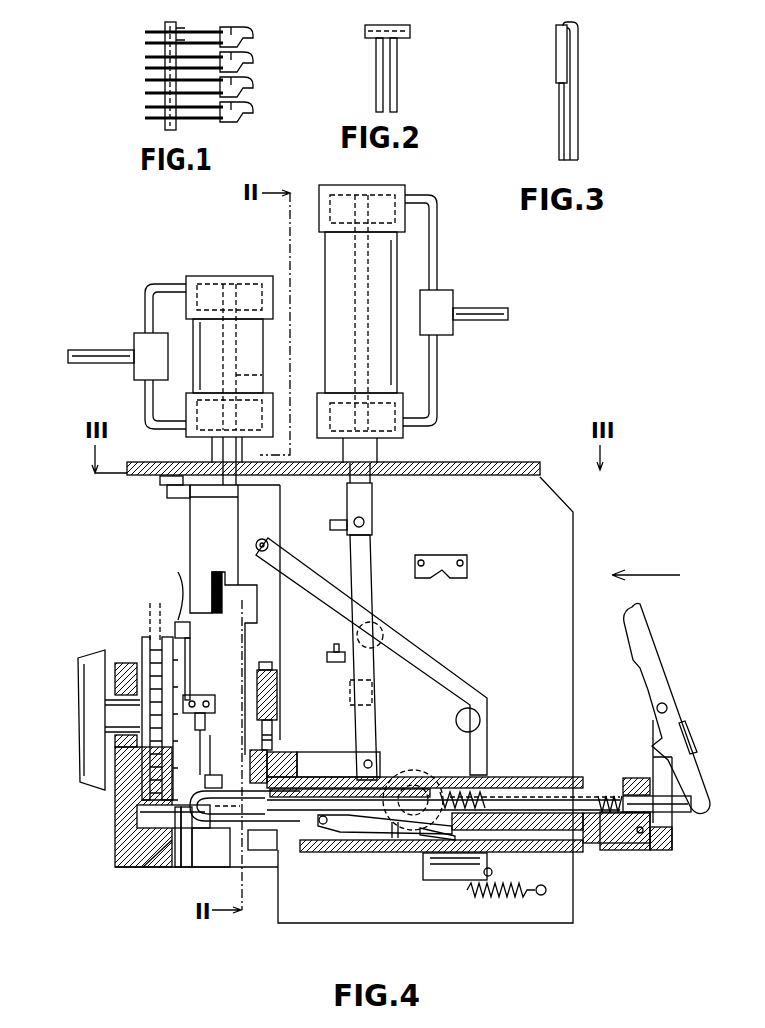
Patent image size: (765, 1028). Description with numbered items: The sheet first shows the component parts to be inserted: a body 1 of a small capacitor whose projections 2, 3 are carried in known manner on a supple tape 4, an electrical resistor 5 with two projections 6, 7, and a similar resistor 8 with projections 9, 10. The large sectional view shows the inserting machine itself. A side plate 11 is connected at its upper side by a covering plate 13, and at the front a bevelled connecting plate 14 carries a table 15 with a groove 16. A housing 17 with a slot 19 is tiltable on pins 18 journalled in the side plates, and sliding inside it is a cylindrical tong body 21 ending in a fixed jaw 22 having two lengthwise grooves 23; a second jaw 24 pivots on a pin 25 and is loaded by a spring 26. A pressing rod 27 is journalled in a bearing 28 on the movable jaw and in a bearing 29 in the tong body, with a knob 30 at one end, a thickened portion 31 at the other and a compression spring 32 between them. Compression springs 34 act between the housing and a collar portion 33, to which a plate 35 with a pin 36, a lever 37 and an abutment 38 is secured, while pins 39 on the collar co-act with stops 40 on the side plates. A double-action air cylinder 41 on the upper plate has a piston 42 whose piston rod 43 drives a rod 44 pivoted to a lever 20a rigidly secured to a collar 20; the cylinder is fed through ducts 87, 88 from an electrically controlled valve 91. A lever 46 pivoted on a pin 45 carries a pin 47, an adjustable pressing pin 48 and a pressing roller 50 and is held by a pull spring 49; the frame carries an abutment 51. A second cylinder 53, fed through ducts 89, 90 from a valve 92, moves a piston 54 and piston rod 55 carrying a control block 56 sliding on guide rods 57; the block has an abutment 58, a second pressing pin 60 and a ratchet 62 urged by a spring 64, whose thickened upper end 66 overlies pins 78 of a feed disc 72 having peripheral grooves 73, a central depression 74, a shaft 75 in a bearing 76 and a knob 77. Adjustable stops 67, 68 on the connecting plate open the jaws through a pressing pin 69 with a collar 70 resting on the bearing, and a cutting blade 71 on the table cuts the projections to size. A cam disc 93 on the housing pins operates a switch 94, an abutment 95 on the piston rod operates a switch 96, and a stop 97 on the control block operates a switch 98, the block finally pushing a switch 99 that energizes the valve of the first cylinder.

In FIG. 1, the body 1 is at (245, 27).
In FIG. 1, the projection 2 is at (165, 30).
In FIG. 1, the projection 3 is at (150, 42).
In FIG. 1, the supple tape 4 is at (176, 30).
In FIG. 2, the electrical resistor 5 is at (390, 26).
In FIG. 2, the projection 6 is at (376, 96).
In FIG. 2, the projection 7 is at (397, 96).
In FIG. 3, the resistor 8 is at (556, 45).
In FIG. 3, the projection 9 is at (579, 125).
In FIG. 3, the projection 10 is at (559, 125).
In FIG. 4, the side plate 11 is at (555, 530).
In FIG. 4, the covering plate 13 is at (497, 462).
In FIG. 4, the bevelled connecting plate 14 is at (268, 673).
In FIG. 4, the table 15 is at (115, 845).
In FIG. 4, the groove 16 is at (222, 850).
In FIG. 4, the housing 17 is at (583, 852).
In FIG. 4, the pin 18 is at (393, 838).
In FIG. 4, the slot 19 is at (355, 834).
In FIG. 4, the collar 20 is at (298, 760).
In FIG. 4, the lever 20a is at (312, 760).
In FIG. 4, the tong body 21 is at (600, 843).
In FIG. 4, the fixed jaw 22 is at (195, 765).
In FIG. 4, the groove 23 is at (182, 835).
In FIG. 4, the second jaw 24 is at (190, 850).
In FIG. 4, the pin 25 is at (325, 828).
In FIG. 4, the spring 26 is at (432, 840).
In FIG. 4, the pressing rod 27 is at (548, 778).
In FIG. 4, the bearing 28 is at (278, 850).
In FIG. 4, the bearing 29 is at (670, 840).
In FIG. 4, the knob 30 is at (262, 822).
In FIG. 4, the thickened portion 31 is at (680, 812).
In FIG. 4, the compression spring 32 is at (606, 778).
In FIG. 4, the collar portion 33 is at (635, 850).
In FIG. 4, the compression spring 34 is at (374, 495).
In FIG. 4, the plate 35 is at (662, 850).
In FIG. 4, the pin 36 is at (668, 708).
In FIG. 4, the lever 37 is at (650, 660).
In FIG. 4, the abutment 38 is at (697, 745).
In FIG. 4, the pin 39 is at (658, 850).
In FIG. 4, the stop 40 is at (443, 558).
In FIG. 4, the double-action air cylinder 41 is at (337, 258).
In FIG. 4, the piston 42 is at (370, 190).
In FIG. 4, the piston rod 43 is at (355, 347).
In FIG. 4, the rod 44 is at (372, 565).
In FIG. 4, the pin 45 is at (480, 720).
In FIG. 4, the lever 46 is at (455, 700).
In FIG. 4, the pin 47 is at (270, 542).
In FIG. 4, the adjustable pressing pin 48 is at (445, 880).
In FIG. 4, the pull spring 49 is at (490, 893).
In FIG. 4, the pressing roller 50 is at (385, 633).
In FIG. 4, the abutment 51 is at (374, 700).
In FIG. 4, the second double-action air cylinder 53 is at (250, 337).
In FIG. 4, the piston 54 is at (237, 292).
In FIG. 4, the piston rod 55 is at (250, 375).
In FIG. 4, the control block 56 is at (200, 535).
In FIG. 4, the guide rod 57 is at (200, 498).
In FIG. 4, the abutment 58 is at (246, 578).
In FIG. 4, the second pressing pin 60 is at (217, 707).
In FIG. 4, the ratchet 62 is at (191, 632).
In FIG. 4, the spring 64 is at (191, 653).
In FIG. 4, the thickened upper end 66 is at (178, 572).
In FIG. 4, the adjustable stop 67 is at (265, 745).
In FIG. 4, the adjustable stop 68 is at (255, 745).
In FIG. 4, the pressing pin 69 is at (258, 750).
In FIG. 4, the collar 70 is at (215, 776).
In FIG. 4, the cutting blade 71 is at (178, 852).
In FIG. 4, the disc 72 is at (150, 785).
In FIG. 4, the peripheral groove 73 is at (130, 718).
In FIG. 4, the central depression 74 is at (150, 648).
In FIG. 4, the shaft 75 is at (128, 738).
In FIG. 4, the bearing 76 is at (115, 698).
In FIG. 4, the knob 77 is at (90, 655).
In FIG. 4, the pin 78 is at (173, 640).
In FIG. 4, the duct 87 is at (440, 258).
In FIG. 4, the duct 88 is at (433, 385).
In FIG. 4, the duct 89 is at (175, 287).
In FIG. 4, the duct 90 is at (148, 404).
In FIG. 4, the electrically controlled valve 91 is at (447, 301).
In FIG. 4, the electrically controlled valve 92 is at (150, 345).
In FIG. 4, the cam disc 93 is at (395, 770).
In FIG. 4, the switch 94 is at (472, 778).
In FIG. 4, the abutment 95 is at (338, 520).
In FIG. 4, the switch 96 is at (327, 652).
In FIG. 4, the stop 97 is at (168, 492).
In FIG. 4, the switch 98 is at (162, 481).
In FIG. 4, the switch 99 is at (212, 760).